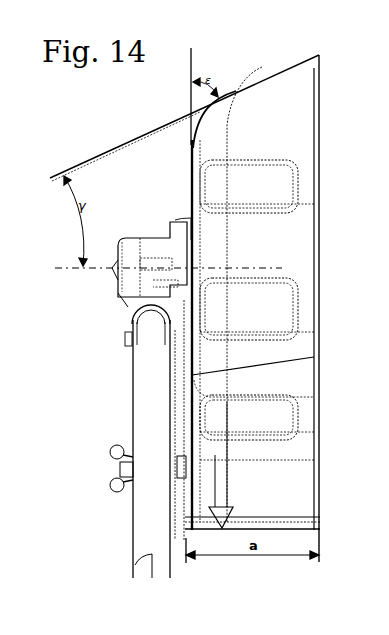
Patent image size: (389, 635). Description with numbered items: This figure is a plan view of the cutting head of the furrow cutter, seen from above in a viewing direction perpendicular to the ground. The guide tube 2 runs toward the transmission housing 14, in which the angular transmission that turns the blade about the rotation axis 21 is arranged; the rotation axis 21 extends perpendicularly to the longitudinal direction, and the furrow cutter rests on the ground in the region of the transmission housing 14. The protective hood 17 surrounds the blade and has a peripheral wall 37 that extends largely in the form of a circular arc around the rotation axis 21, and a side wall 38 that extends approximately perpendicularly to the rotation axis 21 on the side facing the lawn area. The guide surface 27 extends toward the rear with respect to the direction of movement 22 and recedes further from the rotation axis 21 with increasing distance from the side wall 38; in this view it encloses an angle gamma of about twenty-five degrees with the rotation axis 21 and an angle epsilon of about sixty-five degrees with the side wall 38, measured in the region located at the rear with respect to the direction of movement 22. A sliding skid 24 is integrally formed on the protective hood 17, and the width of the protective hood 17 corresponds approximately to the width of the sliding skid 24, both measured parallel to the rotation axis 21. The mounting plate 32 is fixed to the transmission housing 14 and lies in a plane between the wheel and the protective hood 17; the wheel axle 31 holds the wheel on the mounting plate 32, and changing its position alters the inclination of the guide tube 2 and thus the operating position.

The guide tube 2 is at (145, 395).
The transmission housing 14 is at (150, 252).
The protective hood 17 is at (304, 253).
The rotation axis 21 is at (112, 268).
The direction of movement 22 is at (226, 491).
The sliding skid 24 is at (313, 480).
The guide surface 27 is at (268, 80).
The wheel axle 31 is at (180, 470).
The mounting plate 32 is at (314, 357).
The peripheral wall 37 is at (293, 118).
The side wall 38 is at (192, 188).